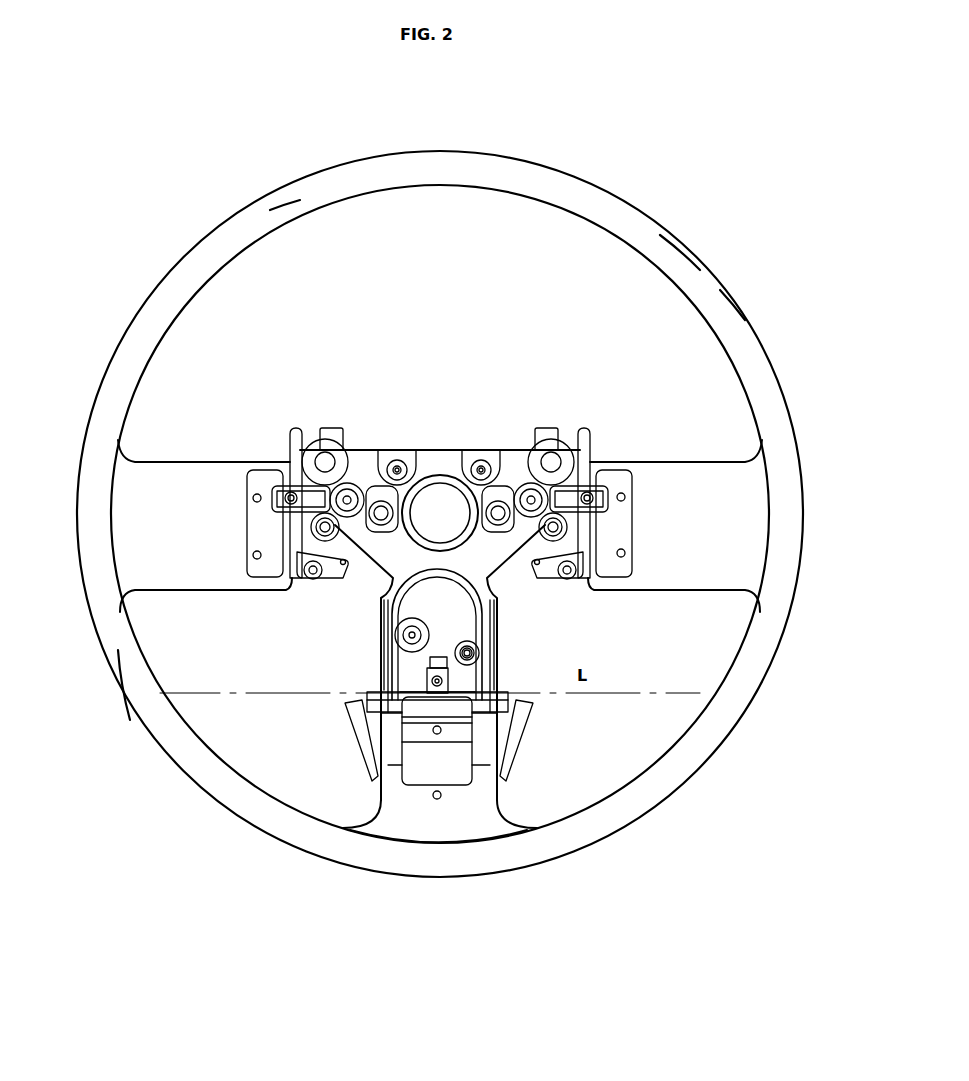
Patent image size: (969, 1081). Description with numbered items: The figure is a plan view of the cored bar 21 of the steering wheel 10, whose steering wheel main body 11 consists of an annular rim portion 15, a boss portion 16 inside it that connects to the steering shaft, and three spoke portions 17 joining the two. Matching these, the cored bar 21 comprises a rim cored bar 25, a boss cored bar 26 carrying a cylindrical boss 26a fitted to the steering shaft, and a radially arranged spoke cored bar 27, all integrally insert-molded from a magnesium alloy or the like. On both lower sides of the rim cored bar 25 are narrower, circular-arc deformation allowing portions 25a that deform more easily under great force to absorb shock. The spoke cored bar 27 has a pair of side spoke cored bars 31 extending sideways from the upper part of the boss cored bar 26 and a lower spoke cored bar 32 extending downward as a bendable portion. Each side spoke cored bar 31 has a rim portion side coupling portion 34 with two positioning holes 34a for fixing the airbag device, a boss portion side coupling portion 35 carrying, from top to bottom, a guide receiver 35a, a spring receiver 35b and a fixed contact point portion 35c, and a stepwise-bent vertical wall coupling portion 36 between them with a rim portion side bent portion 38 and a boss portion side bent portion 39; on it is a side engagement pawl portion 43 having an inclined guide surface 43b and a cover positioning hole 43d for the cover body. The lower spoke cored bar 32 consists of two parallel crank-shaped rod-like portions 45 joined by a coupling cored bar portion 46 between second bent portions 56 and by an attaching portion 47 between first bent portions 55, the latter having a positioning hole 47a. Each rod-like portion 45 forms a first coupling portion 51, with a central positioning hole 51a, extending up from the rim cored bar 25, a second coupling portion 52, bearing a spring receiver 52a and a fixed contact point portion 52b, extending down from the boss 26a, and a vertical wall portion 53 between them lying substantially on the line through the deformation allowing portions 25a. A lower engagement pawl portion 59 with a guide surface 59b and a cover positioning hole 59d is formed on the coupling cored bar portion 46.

The steering wheel 10 is at (574, 119).
The steering wheel main body 11 is at (608, 196).
The rim portion 15 is at (238, 218).
The boss portion 16 is at (499, 544).
The spoke portion 17 is at (171, 465).
The cored bar 21 is at (684, 251).
The rim cored bar 25 is at (737, 306).
The deformation allowing portion 25a is at (122, 689).
The boss cored bar 26 is at (431, 476).
The boss 26a is at (446, 483).
The spoke cored bar 27 is at (163, 582).
The side spoke cored bar 31 is at (668, 582).
The lower spoke cored bar 32 is at (478, 820).
The rim portion side coupling portion 34 is at (137, 492).
The positioning hole 34a is at (247, 545).
The boss portion side coupling portion 35 is at (380, 498).
The guide receiver 35a is at (324, 452).
The spring receiver 35b is at (397, 458).
The fixed contact point portion 35c is at (325, 542).
The vertical wall coupling portion 36 is at (290, 440).
The rim portion side bent portion 38 is at (300, 584).
The boss portion side bent portion 39 is at (306, 442).
The side engagement pawl portion 43 is at (347, 483).
The guide surface 43b is at (288, 488).
The cover positioning hole 43d is at (282, 490).
The rod-like portion 45 is at (386, 624).
The coupling cored bar portion 46 is at (462, 691).
The attaching portion 47 is at (470, 734).
The positioning hole 47a is at (441, 733).
The first coupling portion 51 is at (415, 828).
The positioning hole 51a is at (438, 801).
The second coupling portion 52 is at (483, 585).
The spring receiver 52a is at (412, 630).
The fixed contact point portion 52b is at (463, 647).
The vertical wall portion 53 is at (382, 690).
The first bent portion 55 is at (374, 689).
The second bent portion 56 is at (507, 694).
The lower engagement pawl portion 59 is at (428, 660).
The guide surface 59b is at (449, 678).
The cover positioning hole 59d is at (432, 690).